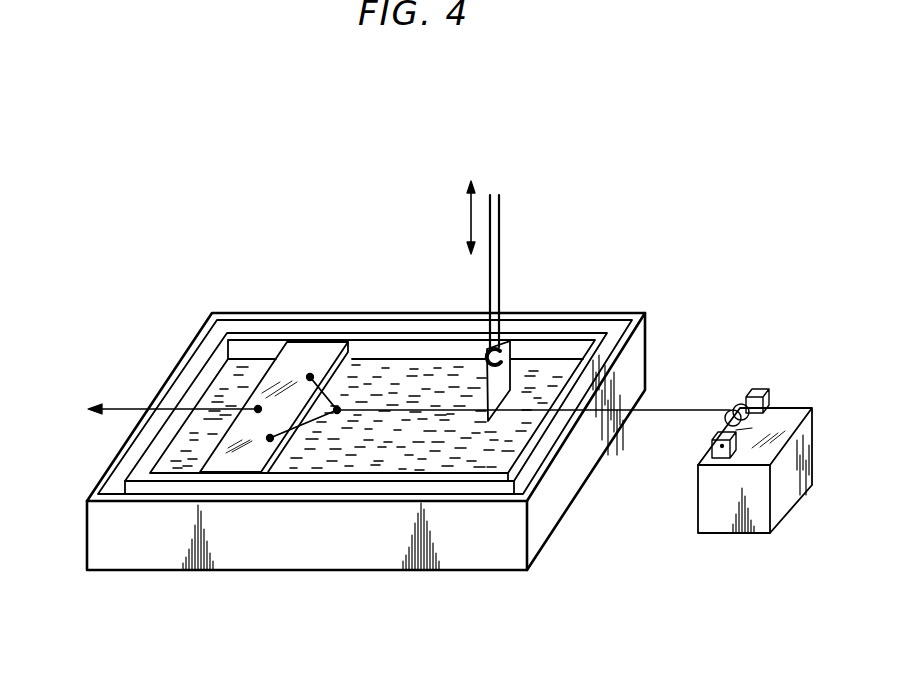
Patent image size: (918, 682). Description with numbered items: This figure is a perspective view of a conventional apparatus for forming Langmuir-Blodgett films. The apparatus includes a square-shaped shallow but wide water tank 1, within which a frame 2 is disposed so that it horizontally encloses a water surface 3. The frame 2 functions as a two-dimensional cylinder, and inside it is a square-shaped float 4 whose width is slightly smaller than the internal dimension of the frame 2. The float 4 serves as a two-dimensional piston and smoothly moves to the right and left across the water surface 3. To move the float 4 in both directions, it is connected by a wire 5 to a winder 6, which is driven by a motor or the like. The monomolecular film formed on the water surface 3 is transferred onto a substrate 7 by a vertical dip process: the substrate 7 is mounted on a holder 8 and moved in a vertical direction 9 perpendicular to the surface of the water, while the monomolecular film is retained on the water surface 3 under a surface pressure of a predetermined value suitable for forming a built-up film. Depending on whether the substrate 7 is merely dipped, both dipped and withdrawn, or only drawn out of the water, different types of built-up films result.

The water tank 1 is at (382, 552).
The frame 2 is at (313, 482).
The water surface 3 is at (430, 463).
The float 4 is at (303, 353).
The wire 5 is at (682, 405).
The winder 6 is at (785, 420).
The substrate 7 is at (505, 368).
The holder 8 is at (501, 222).
The vertical direction 9 is at (470, 218).